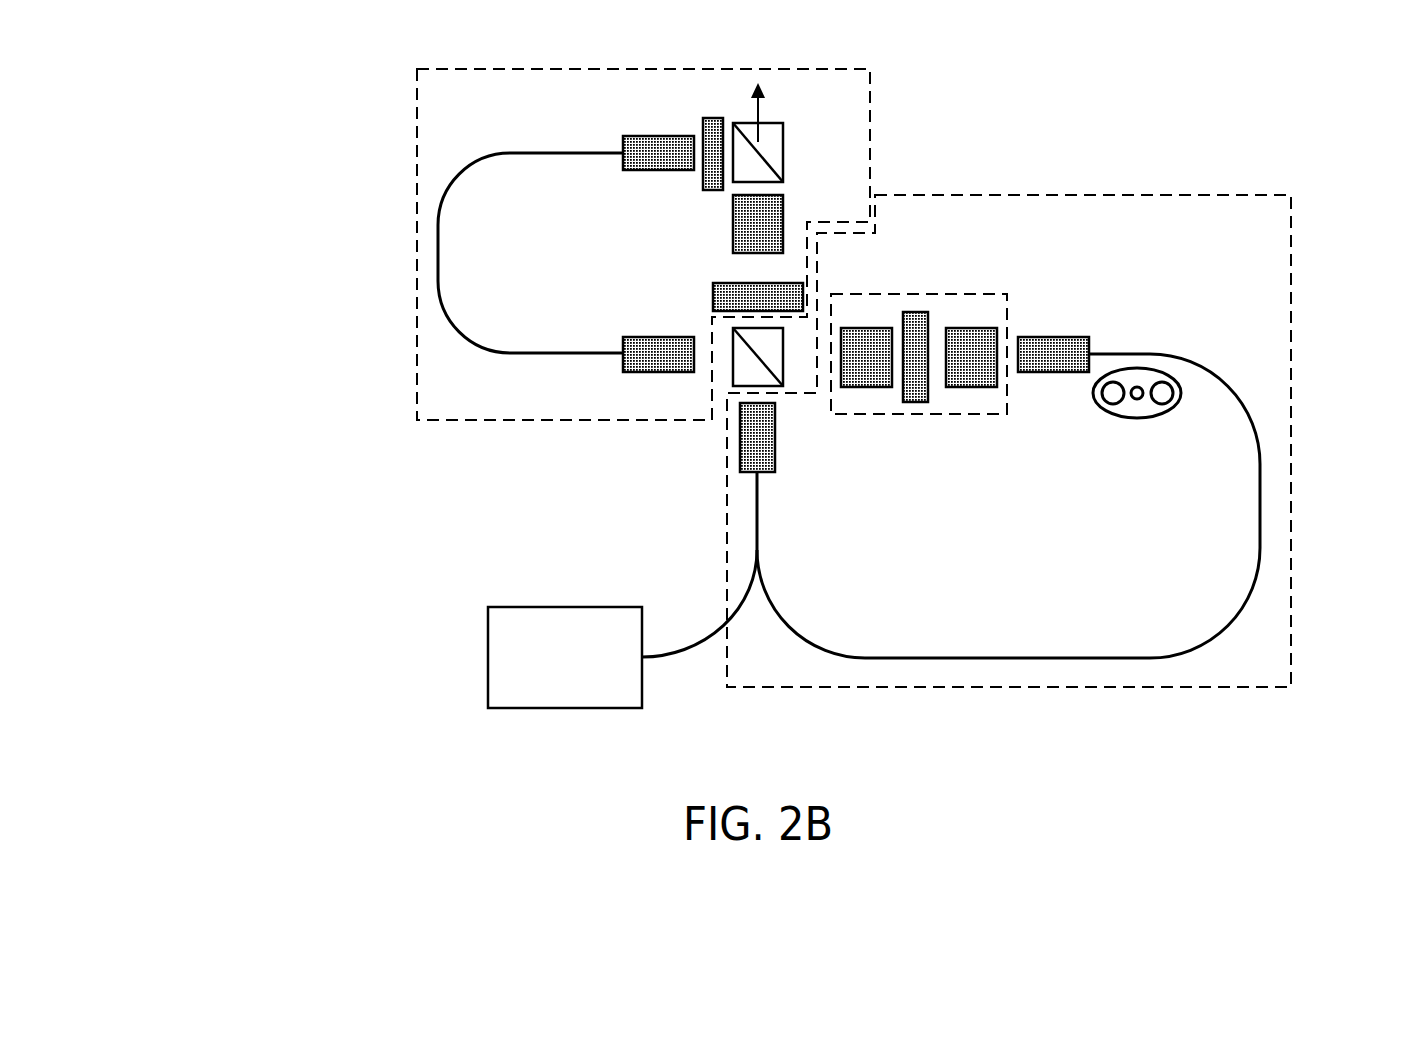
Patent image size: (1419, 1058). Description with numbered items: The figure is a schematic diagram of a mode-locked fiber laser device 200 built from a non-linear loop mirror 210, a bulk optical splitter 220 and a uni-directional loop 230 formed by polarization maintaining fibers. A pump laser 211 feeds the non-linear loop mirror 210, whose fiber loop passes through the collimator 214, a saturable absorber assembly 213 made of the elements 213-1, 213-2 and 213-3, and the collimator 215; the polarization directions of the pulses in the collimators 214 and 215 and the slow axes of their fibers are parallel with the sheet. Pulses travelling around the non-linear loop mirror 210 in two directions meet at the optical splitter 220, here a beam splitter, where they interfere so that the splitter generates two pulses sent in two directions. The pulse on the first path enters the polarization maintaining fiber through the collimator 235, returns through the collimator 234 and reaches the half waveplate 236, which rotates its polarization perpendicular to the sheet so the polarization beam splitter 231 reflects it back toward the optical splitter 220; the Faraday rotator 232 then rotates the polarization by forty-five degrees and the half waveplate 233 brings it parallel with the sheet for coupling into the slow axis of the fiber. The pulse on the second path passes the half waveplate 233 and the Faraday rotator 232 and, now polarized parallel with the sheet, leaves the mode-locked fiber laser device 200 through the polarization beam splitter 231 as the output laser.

The mode-locked fiber laser device 200 is at (259, 131).
The non-linear loop mirror 210 is at (1294, 320).
The pump laser 211 is at (488, 660).
The saturable absorber assembly 213 is at (1010, 308).
The saturable absorber 213-1 is at (915, 311).
The lens 213-2 is at (862, 328).
The lens 213-3 is at (973, 328).
The collimator 214 is at (776, 437).
The collimator 215 is at (1073, 337).
The optical splitter 220 is at (733, 331).
The uni-directional loop 230 is at (417, 160).
The polarization beam splitter 231 is at (783, 153).
The Faraday rotator 232 is at (783, 221).
The half waveplate 233 is at (733, 283).
The collimator 234 is at (658, 137).
The collimator 235 is at (658, 373).
The half waveplate 236 is at (702, 182).